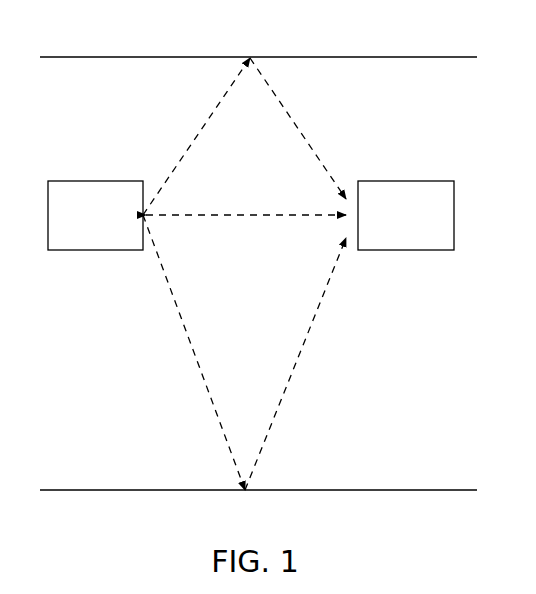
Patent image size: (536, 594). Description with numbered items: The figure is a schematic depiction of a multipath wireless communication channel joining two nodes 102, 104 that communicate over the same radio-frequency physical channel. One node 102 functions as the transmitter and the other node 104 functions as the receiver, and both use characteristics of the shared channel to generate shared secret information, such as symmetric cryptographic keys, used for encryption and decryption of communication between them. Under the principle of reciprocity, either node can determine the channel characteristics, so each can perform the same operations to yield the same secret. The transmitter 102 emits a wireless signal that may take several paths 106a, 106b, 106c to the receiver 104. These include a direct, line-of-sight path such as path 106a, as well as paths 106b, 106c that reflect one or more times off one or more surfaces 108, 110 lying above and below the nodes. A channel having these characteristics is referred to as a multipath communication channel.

The node 102 is at (97, 181).
The node 104 is at (399, 181).
The path 106a is at (189, 147).
The path 106b is at (260, 214).
The path 106c is at (289, 380).
The surface 108 is at (80, 57).
The surface 110 is at (101, 490).